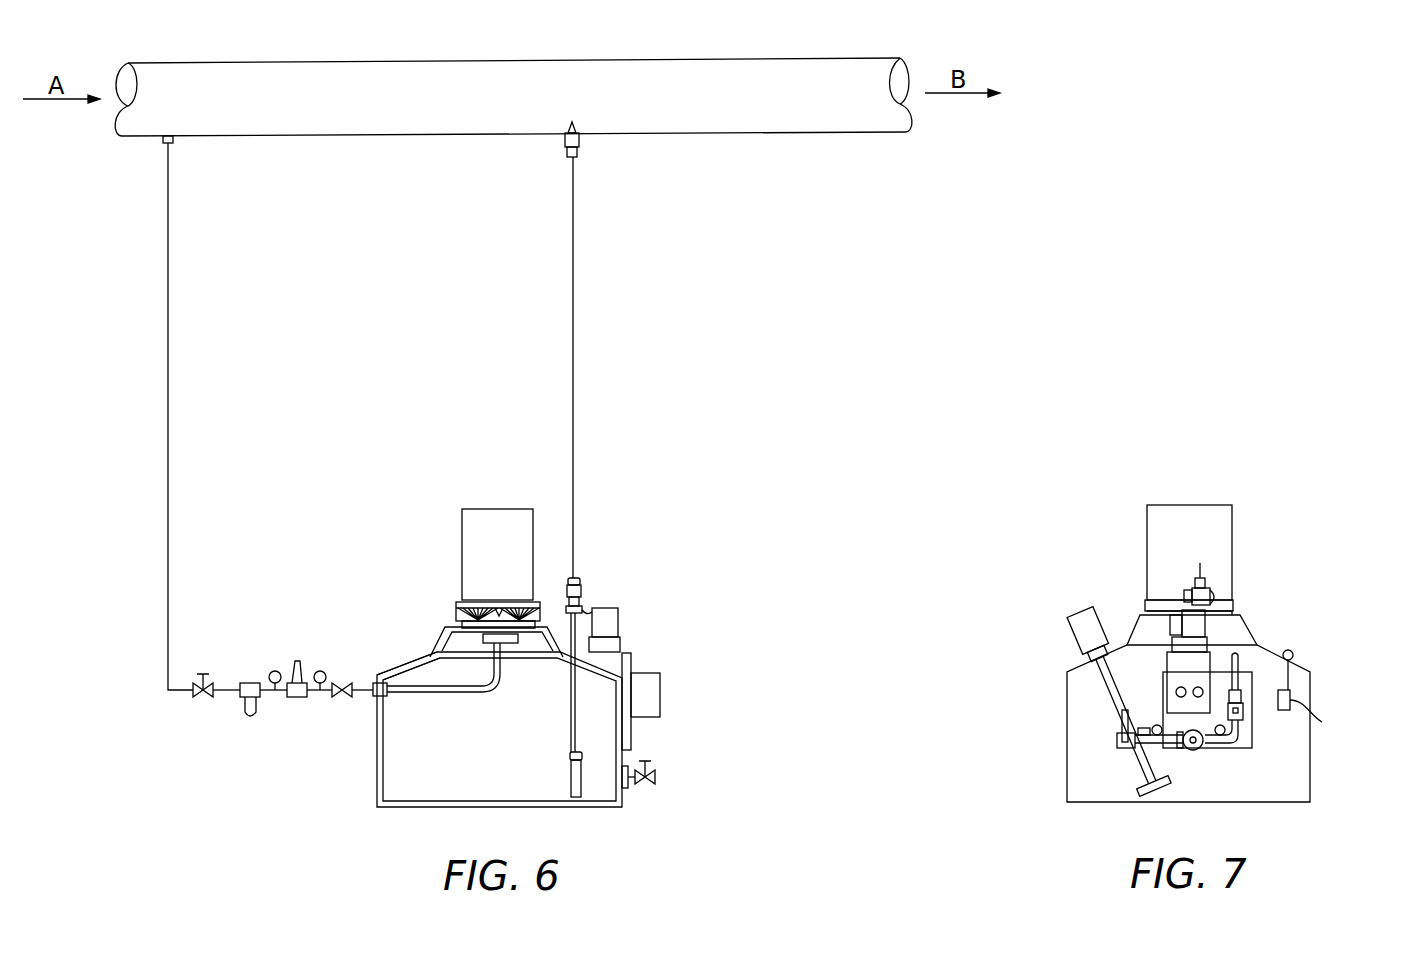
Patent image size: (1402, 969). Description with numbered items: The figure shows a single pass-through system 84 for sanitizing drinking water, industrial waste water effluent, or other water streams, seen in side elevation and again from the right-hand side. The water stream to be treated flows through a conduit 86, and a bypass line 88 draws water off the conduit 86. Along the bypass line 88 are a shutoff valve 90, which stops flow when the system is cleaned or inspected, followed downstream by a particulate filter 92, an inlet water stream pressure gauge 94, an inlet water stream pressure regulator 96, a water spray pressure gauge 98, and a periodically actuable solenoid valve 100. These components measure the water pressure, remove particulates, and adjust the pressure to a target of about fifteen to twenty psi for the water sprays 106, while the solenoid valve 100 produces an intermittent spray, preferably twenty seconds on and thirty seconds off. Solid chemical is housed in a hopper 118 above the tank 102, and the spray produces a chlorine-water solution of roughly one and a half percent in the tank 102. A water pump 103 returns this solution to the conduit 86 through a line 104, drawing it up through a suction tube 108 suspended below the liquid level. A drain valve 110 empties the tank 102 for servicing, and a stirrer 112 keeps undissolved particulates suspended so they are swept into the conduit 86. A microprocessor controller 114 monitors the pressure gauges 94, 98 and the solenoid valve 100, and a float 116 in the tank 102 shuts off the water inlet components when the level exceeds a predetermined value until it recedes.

In FIG. 6, the single pass-through system 84 is at (649, 399).
In FIG. 6, the conduit 86 is at (452, 80).
In FIG. 6, the bypass line 88 is at (168, 338).
In FIG. 6, the shutoff valve 90 is at (206, 672).
In FIG. 6, the particulate filter 92 is at (250, 712).
In FIG. 6, the inlet water stream pressure gauge 94 is at (275, 671).
In FIG. 6, the inlet water stream pressure regulator 96 is at (297, 697).
In FIG. 6, the water spray pressure gauge 98 is at (322, 671).
In FIG. 6, the solenoid valve 100 is at (345, 697).
In FIG. 6, the tank 102 is at (410, 807).
In FIG. 6, the water pump 103 is at (613, 623).
In FIG. 7, the water pump 103 is at (1197, 625).
In FIG. 6, the line 104 is at (573, 340).
In FIG. 6, the water sprays 106 is at (470, 643).
In FIG. 6, the suction tube 108 is at (570, 782).
In FIG. 6, the drain valve 110 is at (650, 784).
In FIG. 7, the stirrer 112 is at (1083, 628).
In FIG. 6, the microprocessor controller 114 is at (655, 700).
In FIG. 7, the microprocessor controller 114 is at (1182, 680).
In FIG. 7, the float 116 is at (1322, 722).
In FIG. 6, the hopper 118 is at (521, 572).
In FIG. 7, the hopper 118 is at (1209, 549).